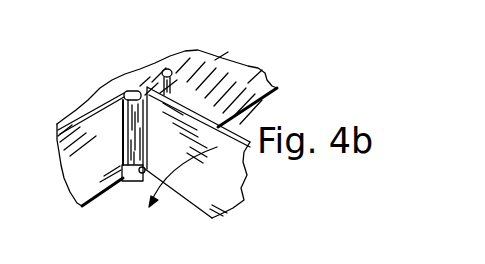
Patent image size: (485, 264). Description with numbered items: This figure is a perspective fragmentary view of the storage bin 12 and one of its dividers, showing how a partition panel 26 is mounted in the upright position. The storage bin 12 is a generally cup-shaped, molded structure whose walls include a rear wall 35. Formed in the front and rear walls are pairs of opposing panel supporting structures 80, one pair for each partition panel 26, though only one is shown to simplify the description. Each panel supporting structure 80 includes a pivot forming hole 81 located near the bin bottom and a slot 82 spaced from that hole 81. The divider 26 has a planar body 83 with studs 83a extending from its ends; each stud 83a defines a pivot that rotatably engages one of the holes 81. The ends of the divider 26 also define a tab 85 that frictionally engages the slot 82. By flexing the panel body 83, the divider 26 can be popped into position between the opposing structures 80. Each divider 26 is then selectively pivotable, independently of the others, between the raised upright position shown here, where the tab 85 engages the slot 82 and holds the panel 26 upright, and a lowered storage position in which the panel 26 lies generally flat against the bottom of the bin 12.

The storage bin 12 is at (252, 66).
The partition panel 26 is at (248, 188).
The rear wall 35 is at (240, 92).
The panel supporting structure 80 is at (177, 74).
The pivot forming hole 81 is at (141, 176).
The slot 82 is at (137, 92).
The planar body 83 is at (227, 197).
The stud 83a is at (122, 168).
The tab 85 is at (127, 110).